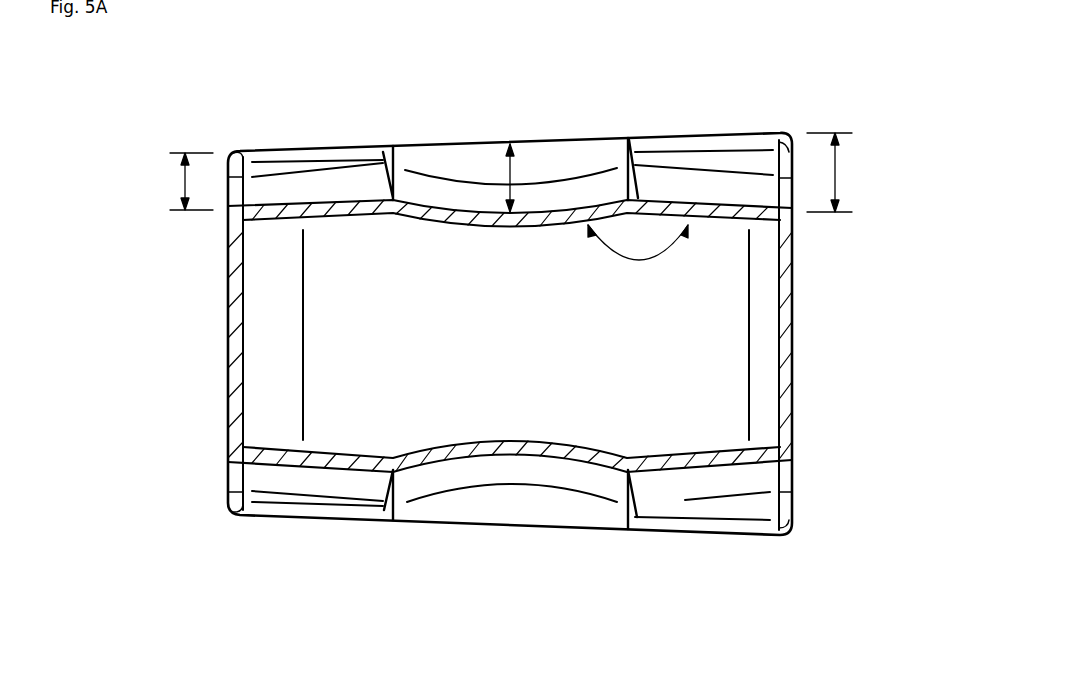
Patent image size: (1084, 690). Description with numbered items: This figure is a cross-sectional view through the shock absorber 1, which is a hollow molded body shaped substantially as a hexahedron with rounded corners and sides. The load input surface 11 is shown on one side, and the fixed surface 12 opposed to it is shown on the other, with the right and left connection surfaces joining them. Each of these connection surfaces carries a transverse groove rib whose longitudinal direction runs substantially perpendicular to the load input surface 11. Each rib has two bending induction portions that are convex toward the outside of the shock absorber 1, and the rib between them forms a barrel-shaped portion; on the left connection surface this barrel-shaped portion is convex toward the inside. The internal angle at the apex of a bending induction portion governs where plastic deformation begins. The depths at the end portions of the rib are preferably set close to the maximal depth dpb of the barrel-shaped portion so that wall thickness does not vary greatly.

The shock absorber 1 is at (815, 112).
The load input surface 11 is at (195, 335).
The fixed surface 12 is at (817, 347).
The maximal depth of the barrel-shaped portion dpb is at (530, 143).